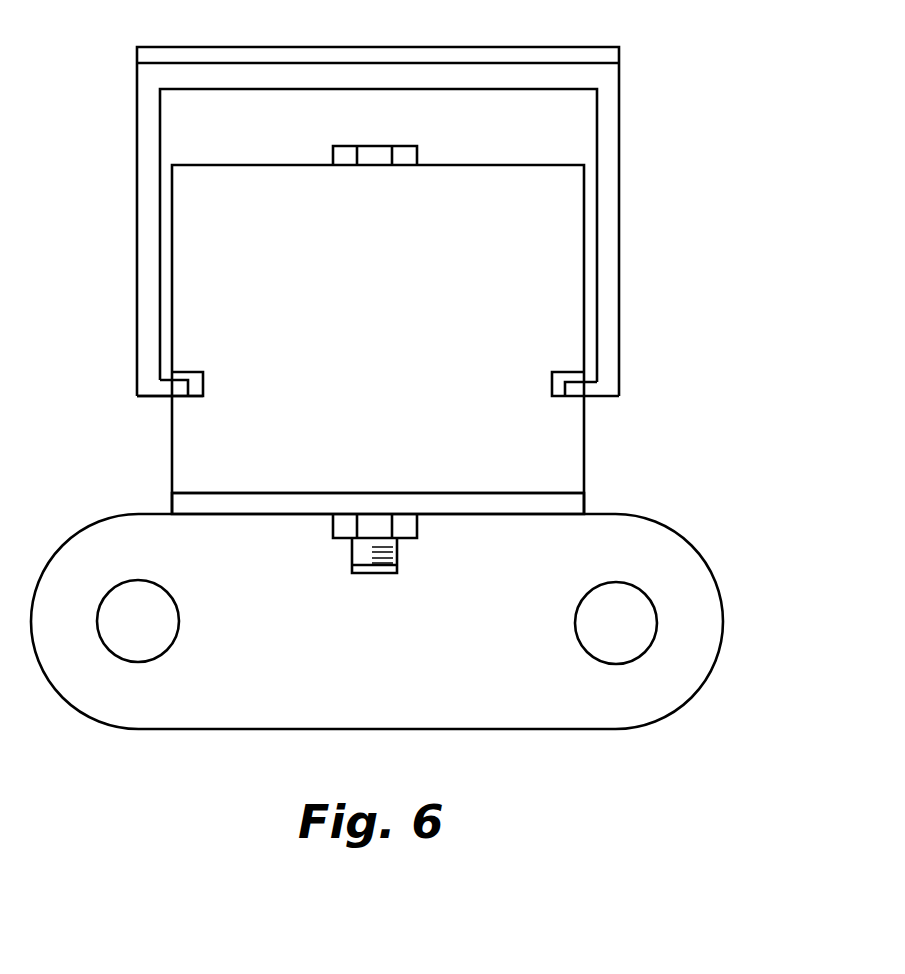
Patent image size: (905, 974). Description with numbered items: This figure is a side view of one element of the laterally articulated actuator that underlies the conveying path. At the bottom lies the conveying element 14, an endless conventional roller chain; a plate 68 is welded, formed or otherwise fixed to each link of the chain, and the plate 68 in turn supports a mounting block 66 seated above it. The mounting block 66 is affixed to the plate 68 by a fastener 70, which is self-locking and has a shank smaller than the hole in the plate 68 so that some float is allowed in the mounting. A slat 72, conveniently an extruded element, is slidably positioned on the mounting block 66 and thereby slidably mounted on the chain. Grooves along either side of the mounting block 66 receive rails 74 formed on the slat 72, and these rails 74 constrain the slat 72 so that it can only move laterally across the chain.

The elongate conveying element 14 is at (723, 628).
The mounting block 66 is at (291, 474).
The plate 68 is at (185, 501).
The fastener 70 is at (373, 575).
The slat 72 is at (619, 118).
The rail 74 is at (150, 396).